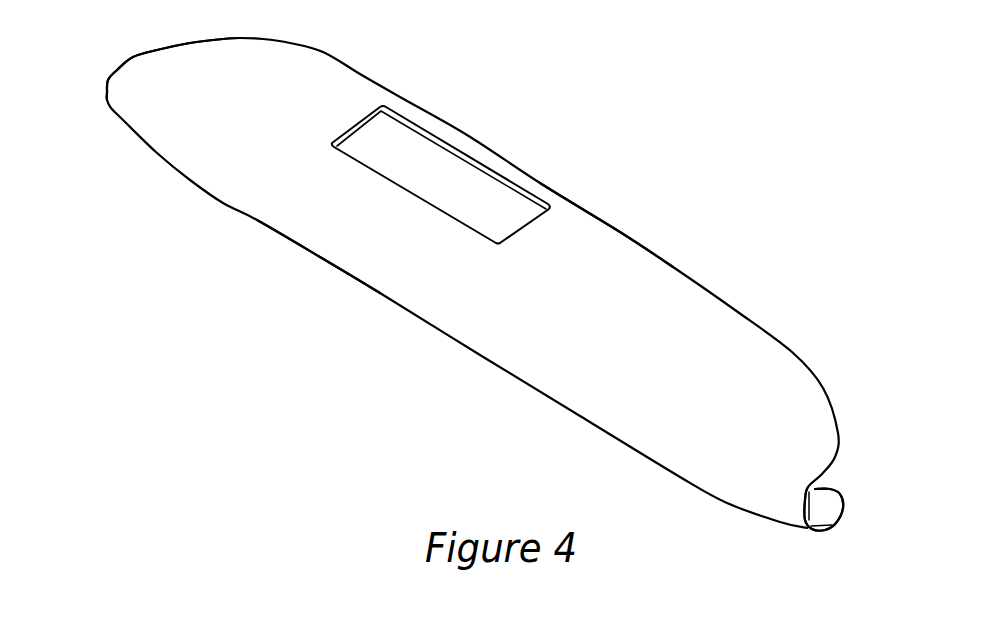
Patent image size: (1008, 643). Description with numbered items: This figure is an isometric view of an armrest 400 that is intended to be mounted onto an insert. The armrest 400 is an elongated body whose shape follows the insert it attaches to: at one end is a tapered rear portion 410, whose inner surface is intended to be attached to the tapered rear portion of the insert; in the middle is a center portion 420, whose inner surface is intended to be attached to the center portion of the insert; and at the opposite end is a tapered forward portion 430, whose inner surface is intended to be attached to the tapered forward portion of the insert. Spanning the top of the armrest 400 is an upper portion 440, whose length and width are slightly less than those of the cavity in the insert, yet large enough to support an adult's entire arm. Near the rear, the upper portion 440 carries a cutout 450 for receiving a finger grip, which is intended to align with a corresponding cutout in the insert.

The armrest 400 is at (593, 157).
The tapered rear portion 410 is at (207, 107).
The center portion 420 is at (460, 287).
The tapered forward portion 430 is at (767, 450).
The upper portion 440 is at (595, 278).
The cutout 450 is at (438, 165).